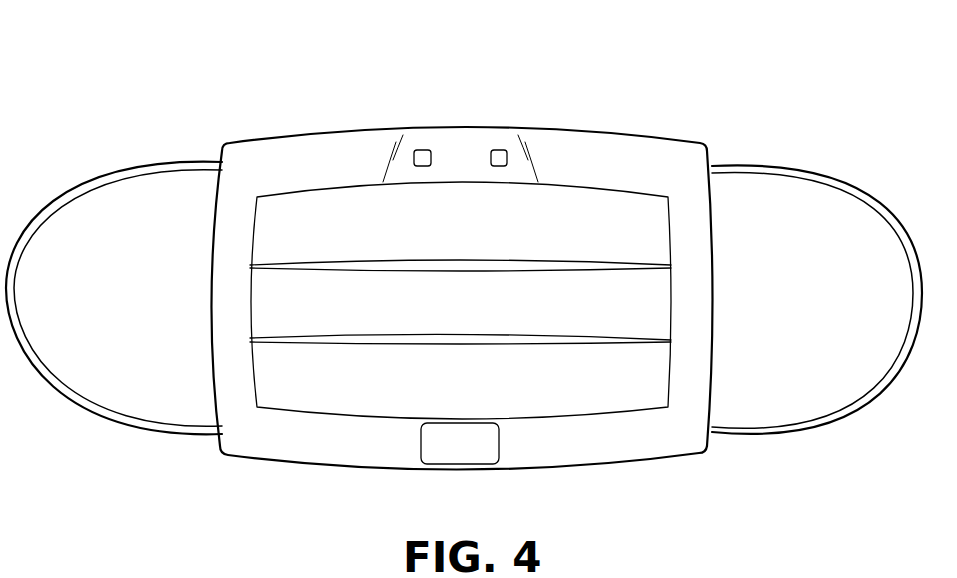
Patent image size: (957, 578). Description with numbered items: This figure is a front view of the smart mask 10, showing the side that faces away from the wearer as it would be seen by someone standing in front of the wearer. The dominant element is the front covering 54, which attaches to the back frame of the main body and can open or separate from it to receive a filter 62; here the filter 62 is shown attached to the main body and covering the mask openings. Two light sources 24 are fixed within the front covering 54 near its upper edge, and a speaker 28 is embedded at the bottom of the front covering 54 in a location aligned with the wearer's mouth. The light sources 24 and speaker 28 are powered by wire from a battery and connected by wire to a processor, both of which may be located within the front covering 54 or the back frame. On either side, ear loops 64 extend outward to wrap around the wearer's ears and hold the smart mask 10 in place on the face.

The smart mask 10 is at (205, 73).
The light source 24 is at (422, 150).
The speaker 28 is at (499, 443).
The front covering 54 is at (618, 165).
The filter 62 is at (597, 386).
The ear loops 64 is at (797, 167).